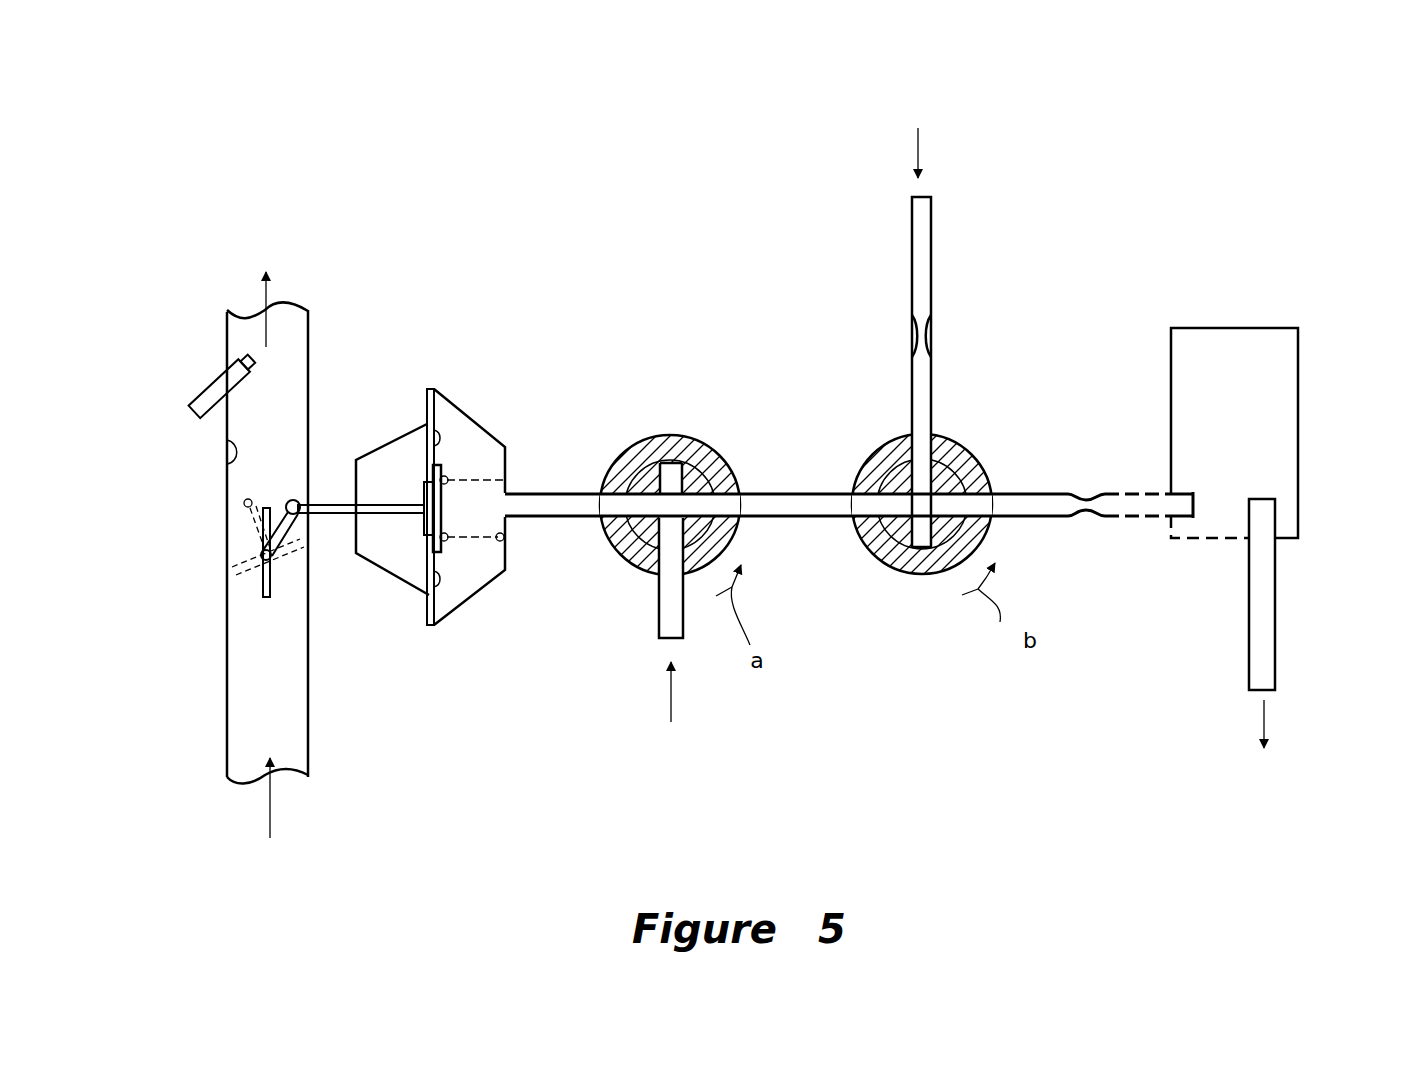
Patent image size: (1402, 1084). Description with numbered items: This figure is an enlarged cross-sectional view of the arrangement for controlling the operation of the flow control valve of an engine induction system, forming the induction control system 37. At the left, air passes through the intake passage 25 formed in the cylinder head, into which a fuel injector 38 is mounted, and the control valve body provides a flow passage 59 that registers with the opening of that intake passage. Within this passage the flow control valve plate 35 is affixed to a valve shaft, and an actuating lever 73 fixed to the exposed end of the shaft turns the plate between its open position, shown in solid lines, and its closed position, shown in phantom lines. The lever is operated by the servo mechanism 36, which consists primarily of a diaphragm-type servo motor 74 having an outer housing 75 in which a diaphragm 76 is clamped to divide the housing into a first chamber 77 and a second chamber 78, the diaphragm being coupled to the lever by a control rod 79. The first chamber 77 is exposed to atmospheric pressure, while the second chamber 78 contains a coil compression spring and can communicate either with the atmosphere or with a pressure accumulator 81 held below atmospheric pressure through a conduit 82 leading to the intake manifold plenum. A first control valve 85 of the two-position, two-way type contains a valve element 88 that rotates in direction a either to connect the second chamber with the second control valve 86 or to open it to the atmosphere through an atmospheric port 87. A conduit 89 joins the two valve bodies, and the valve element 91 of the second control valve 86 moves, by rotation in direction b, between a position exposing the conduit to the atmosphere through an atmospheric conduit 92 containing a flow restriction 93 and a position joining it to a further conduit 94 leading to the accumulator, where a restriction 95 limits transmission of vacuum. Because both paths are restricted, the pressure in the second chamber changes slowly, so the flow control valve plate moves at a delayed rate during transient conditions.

The intake passage 25 is at (227, 348).
The fuel injector 38 is at (207, 389).
The flow passage 59 is at (227, 448).
The actuating lever 73 is at (291, 502).
The flow control valve plate 35 is at (260, 580).
The diaphragm-type servo motor 74 is at (417, 512).
The outer housing 75 is at (410, 590).
The diaphragm 76 is at (430, 457).
The first chamber 77 is at (372, 467).
The second chamber 78 is at (470, 437).
The actuator rod 79 is at (330, 520).
The pressure accumulator 81 is at (500, 548).
The conduit 82 is at (1277, 620).
The first control valve 85 is at (645, 528).
The second control valve 86 is at (892, 336).
The atmospheric port 87 is at (658, 617).
The valve element 88 is at (645, 457).
The conduit 89 is at (849, 524).
The valve element 91 is at (965, 435).
The atmospheric conduit 92 is at (880, 323).
The flow restriction 93 is at (912, 338).
The further conduit 94 is at (1045, 490).
The restriction 95 is at (1088, 520).
The servo mechanism 36 is at (577, 750).
The induction control system 37 is at (1010, 293).